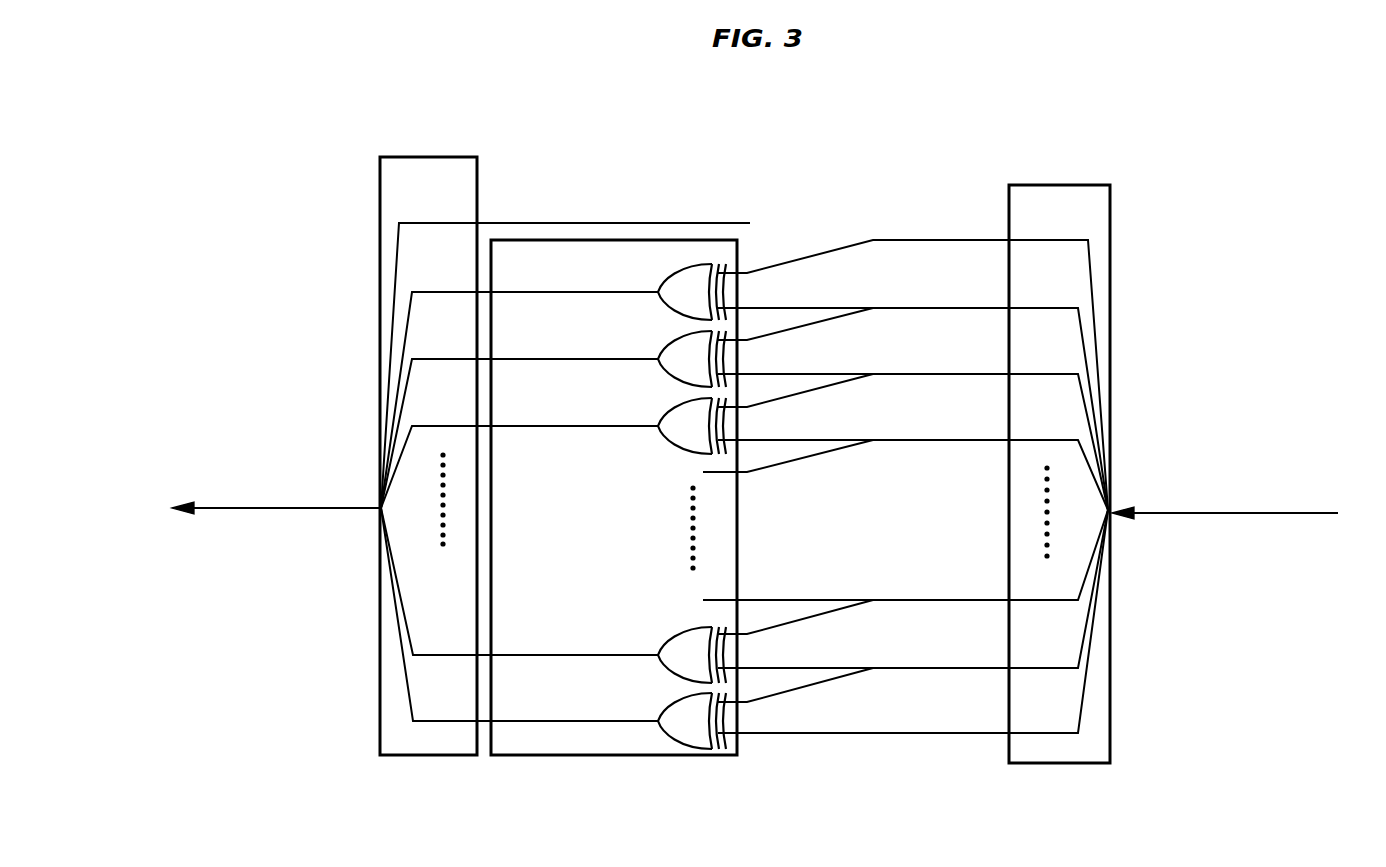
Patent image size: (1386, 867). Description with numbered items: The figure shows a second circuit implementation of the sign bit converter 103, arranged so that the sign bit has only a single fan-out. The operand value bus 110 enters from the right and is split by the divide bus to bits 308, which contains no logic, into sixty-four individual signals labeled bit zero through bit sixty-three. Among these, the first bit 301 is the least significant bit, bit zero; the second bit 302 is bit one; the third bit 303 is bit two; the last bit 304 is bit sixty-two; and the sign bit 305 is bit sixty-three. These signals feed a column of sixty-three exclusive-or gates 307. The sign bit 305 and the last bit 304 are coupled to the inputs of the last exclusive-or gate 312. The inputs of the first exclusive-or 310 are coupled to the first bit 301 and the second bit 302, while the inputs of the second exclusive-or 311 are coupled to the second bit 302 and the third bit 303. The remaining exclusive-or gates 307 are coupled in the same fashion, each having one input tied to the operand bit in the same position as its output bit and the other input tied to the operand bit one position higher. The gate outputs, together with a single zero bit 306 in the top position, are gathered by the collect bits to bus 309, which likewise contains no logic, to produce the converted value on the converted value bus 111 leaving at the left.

The sign bit converter 103 is at (757, 148).
The operand value bus 110 is at (1246, 491).
The converted value bus 111 is at (228, 487).
The first bit 301 is at (913, 621).
The second bit 302 is at (913, 606).
The third bit 303 is at (905, 572).
The last bit 304 is at (913, 393).
The sign bit 305 is at (913, 360).
The zero bit 306 is at (576, 351).
The exclusive-or gates 307 is at (614, 517).
The divide bus to bits 308 is at (1066, 504).
The collect bits to bus 309 is at (327, 476).
The first exclusive-or 310 is at (614, 716).
The second exclusive-or 311 is at (616, 639).
The last exclusive-or gate 312 is at (614, 284).